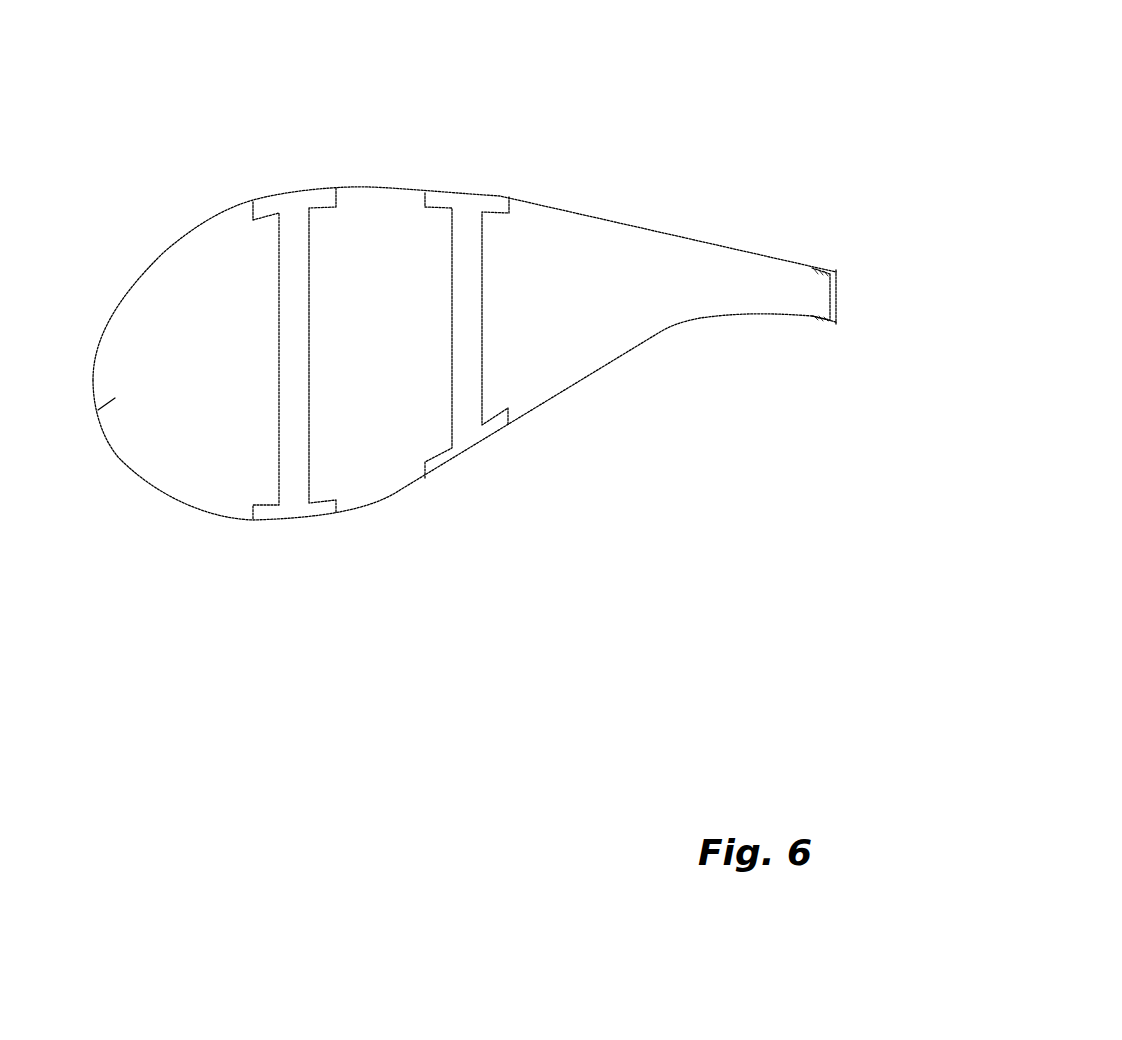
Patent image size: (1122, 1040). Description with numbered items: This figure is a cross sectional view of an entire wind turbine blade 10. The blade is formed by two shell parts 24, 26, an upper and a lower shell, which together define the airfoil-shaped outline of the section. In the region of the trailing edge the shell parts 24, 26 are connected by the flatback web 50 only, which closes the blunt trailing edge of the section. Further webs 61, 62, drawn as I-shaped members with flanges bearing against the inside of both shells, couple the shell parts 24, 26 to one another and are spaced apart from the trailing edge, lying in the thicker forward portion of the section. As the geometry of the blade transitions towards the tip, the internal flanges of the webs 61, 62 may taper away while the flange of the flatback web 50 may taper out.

The wind turbine blade 10 is at (498, 403).
The shell part 24 is at (370, 187).
The shell part 26 is at (383, 500).
The flatback web 50 is at (833, 288).
The web 61 is at (290, 343).
The web 62 is at (467, 327).